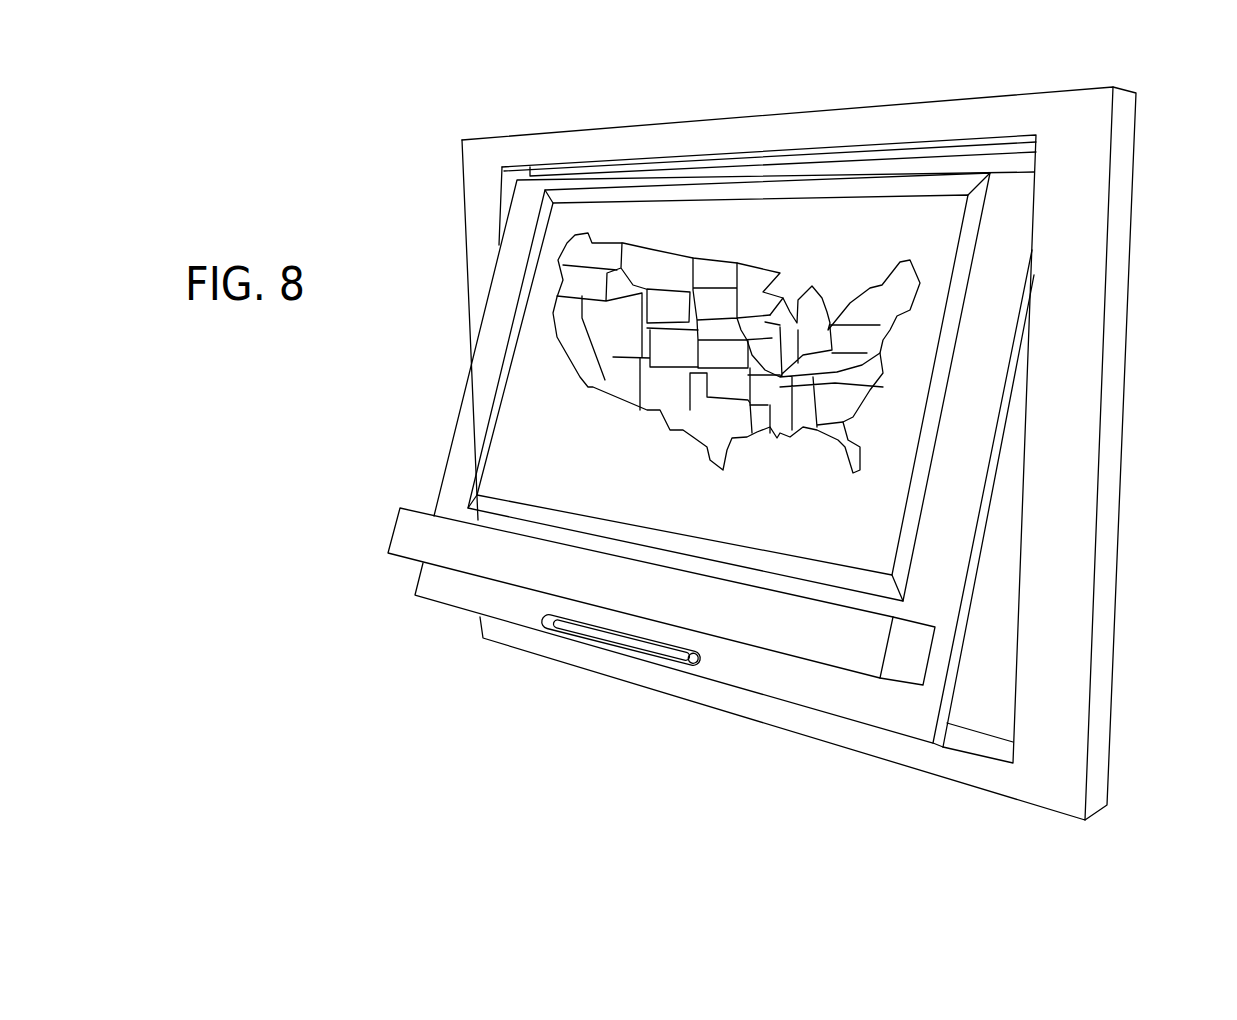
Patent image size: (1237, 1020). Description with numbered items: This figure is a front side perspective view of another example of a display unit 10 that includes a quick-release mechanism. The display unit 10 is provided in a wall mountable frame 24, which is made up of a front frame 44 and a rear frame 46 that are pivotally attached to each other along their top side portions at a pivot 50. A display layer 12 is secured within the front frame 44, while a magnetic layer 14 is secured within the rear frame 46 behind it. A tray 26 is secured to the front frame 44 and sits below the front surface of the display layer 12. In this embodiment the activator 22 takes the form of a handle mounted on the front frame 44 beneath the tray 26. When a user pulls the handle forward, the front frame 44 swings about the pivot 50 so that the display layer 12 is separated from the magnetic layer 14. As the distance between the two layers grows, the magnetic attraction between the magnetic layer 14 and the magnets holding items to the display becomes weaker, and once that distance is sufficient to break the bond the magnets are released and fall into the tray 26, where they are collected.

The display unit 10 is at (389, 187).
The display layer 12 is at (857, 237).
The magnetic layer 14 is at (997, 643).
The activator 22 is at (624, 643).
The wall mountable frame 24 is at (1131, 735).
The tray 26 is at (404, 530).
The front frame 44 is at (968, 445).
The rear frame 46 is at (1068, 571).
The pivot 50 is at (517, 178).